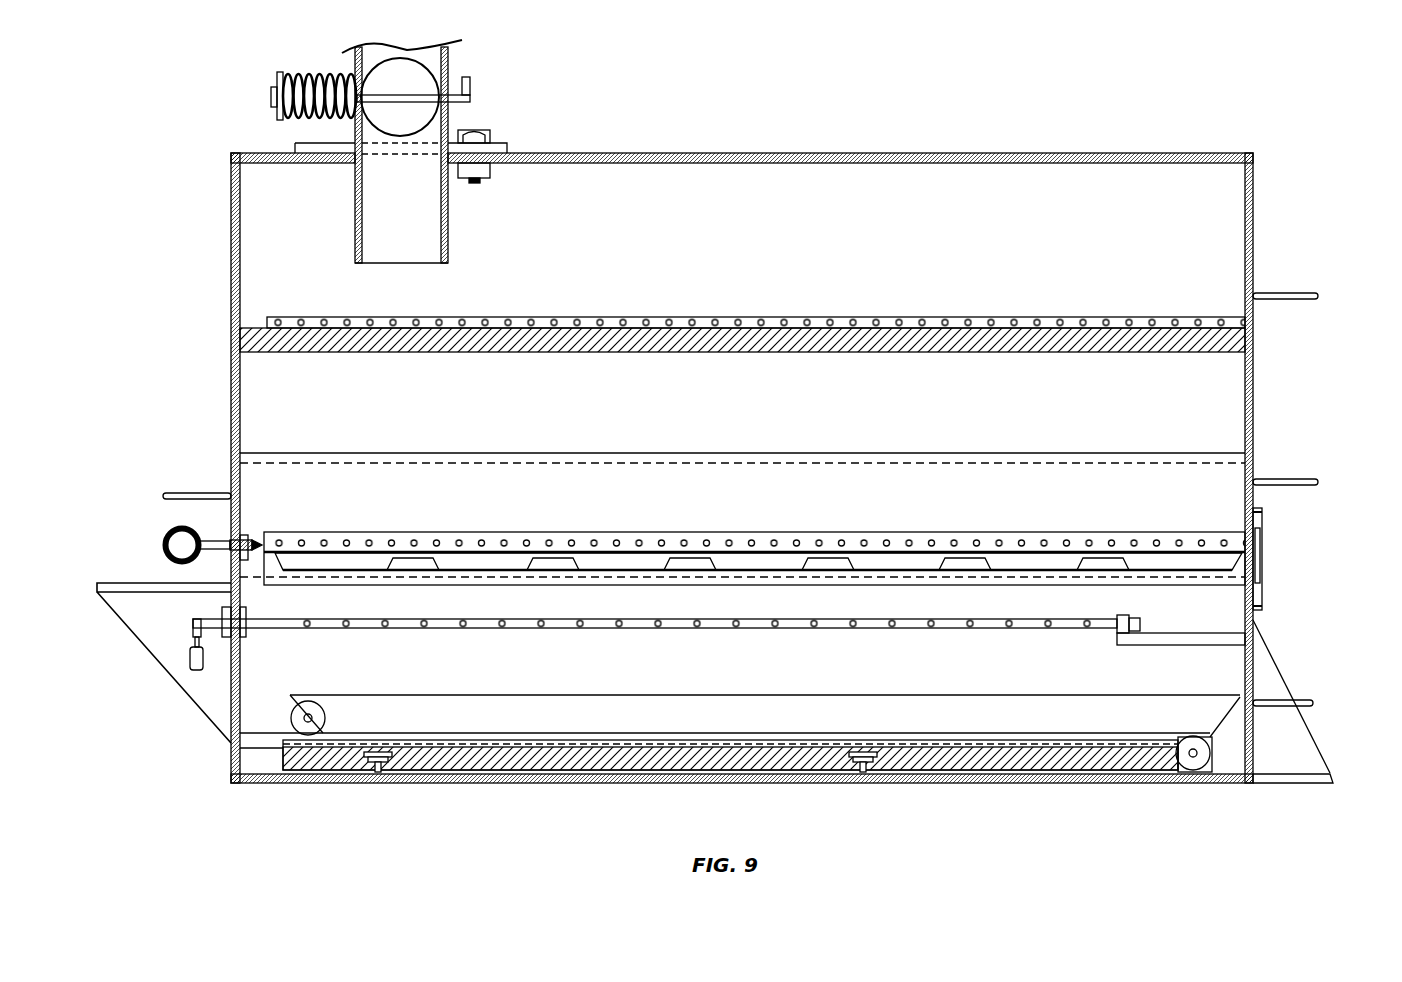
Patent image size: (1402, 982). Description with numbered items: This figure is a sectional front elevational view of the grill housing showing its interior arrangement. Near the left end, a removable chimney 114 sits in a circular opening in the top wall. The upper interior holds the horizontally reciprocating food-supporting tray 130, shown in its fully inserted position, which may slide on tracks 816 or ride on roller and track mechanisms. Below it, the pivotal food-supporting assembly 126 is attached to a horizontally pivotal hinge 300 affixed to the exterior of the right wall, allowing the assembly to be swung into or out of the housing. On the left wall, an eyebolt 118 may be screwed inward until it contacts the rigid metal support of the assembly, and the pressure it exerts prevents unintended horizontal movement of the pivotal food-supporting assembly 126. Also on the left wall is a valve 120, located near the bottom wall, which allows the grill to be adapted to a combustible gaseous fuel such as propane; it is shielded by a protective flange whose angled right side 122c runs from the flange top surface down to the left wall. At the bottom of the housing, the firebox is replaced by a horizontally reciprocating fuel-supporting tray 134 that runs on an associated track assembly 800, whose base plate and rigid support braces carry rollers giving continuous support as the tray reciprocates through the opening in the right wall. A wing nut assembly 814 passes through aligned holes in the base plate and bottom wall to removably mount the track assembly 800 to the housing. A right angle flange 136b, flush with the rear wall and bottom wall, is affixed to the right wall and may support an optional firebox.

The removable chimney 114 is at (447, 65).
The horizontally reciprocating food-supporting tray 130 is at (1153, 317).
The tracks 816 is at (1155, 338).
The eyebolt 118 is at (173, 527).
The food-supporting assembly 126 is at (357, 533).
The horizontally pivotal hinge 300 is at (1260, 528).
The right side of flange 122c is at (140, 622).
The valve 120 is at (193, 673).
The horizontally reciprocating fuel-supporting tray 134 is at (1138, 708).
The right angle flange 136b is at (1293, 758).
The track assembly 800 is at (720, 755).
The wing nut assembly 814 is at (387, 782).